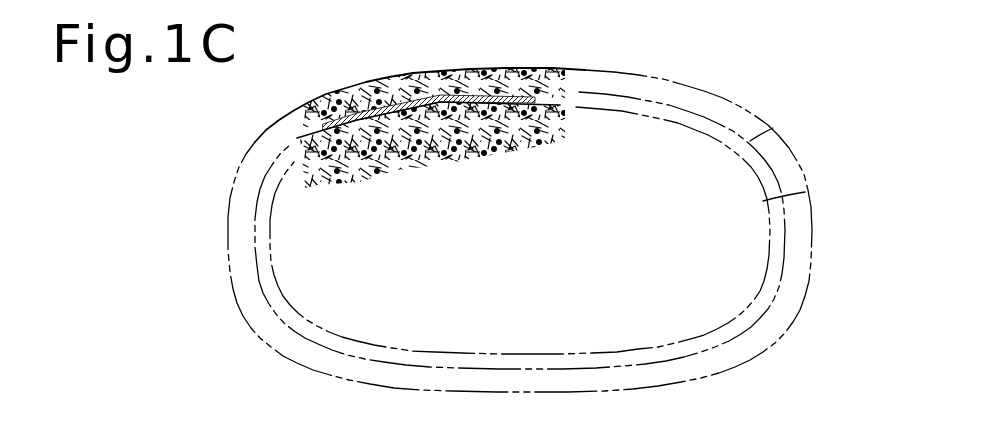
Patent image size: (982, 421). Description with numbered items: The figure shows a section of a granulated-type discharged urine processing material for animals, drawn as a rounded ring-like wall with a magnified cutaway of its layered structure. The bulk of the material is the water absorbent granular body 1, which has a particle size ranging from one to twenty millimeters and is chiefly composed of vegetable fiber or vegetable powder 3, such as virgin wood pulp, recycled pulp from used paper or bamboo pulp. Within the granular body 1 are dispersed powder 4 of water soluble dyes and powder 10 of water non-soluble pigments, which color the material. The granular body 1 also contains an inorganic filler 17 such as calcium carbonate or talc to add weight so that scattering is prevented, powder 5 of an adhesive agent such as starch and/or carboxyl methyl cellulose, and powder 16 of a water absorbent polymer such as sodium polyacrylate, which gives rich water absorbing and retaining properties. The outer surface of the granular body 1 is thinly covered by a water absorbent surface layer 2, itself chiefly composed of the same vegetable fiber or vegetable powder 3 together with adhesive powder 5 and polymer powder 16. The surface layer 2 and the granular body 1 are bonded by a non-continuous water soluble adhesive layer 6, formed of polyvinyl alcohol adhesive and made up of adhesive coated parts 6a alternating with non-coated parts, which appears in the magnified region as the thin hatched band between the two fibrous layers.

The water absorbent granular body 1 is at (539, 217).
The water absorbent surface layer 2 is at (713, 90).
The vegetable fiber or vegetable powder 3 is at (439, 125).
The powder of water soluble dyes 4 is at (432, 167).
The powder of an adhesive agent 5 is at (453, 97).
The non-continuous water soluble adhesive layer 6 is at (773, 129).
The adhesive coated parts 6a is at (328, 112).
The powder of water non-soluble pigments 10 is at (378, 165).
The powder of a water absorbent polymer 16 is at (378, 92).
The inorganic filler 17 is at (567, 125).